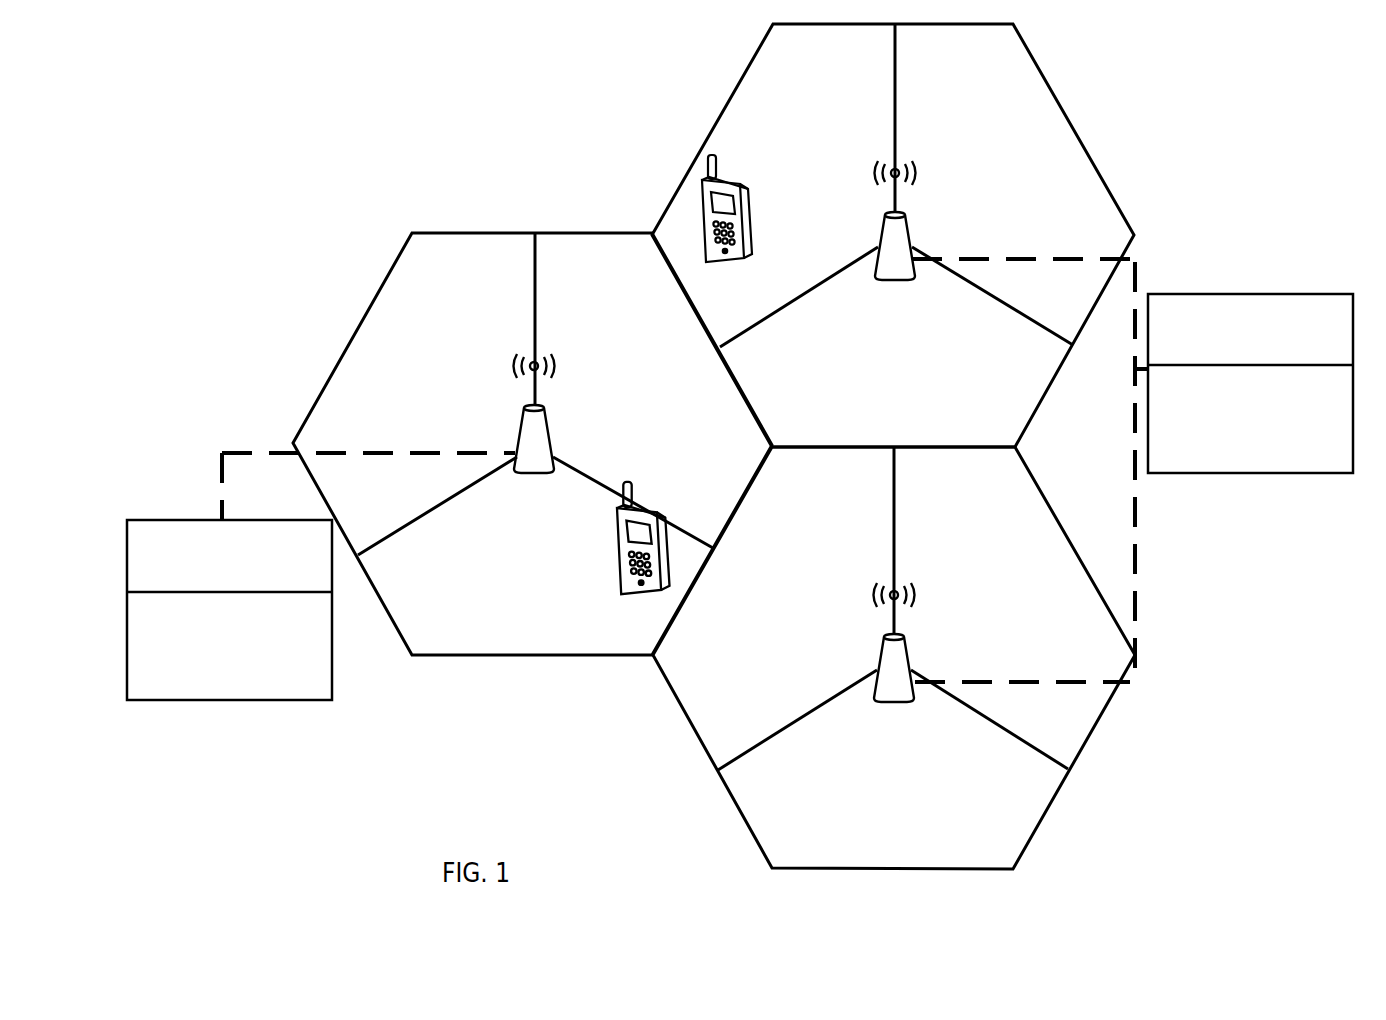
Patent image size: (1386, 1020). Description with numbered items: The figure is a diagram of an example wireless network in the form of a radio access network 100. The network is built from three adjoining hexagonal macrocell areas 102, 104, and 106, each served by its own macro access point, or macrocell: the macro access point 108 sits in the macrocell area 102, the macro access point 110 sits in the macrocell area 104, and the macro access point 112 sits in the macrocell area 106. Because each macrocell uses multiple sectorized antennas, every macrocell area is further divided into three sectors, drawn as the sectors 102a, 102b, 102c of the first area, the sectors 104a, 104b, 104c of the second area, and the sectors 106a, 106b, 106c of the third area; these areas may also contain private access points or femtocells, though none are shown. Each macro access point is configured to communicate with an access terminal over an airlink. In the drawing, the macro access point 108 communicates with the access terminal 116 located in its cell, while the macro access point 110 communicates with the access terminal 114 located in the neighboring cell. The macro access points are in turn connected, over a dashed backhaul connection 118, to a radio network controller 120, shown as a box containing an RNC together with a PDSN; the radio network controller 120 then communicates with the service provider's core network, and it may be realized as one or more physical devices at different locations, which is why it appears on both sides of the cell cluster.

The radio access network 100 is at (326, 104).
The macrocell area 102 is at (386, 275).
The sector 102a is at (448, 407).
The sector 102b is at (653, 408).
The sector 102c is at (556, 598).
The macrocell area 104 is at (1077, 130).
The sector 104a is at (810, 193).
The sector 104b is at (1016, 188).
The sector 104c is at (921, 383).
The macrocell area 106 is at (720, 778).
The sector 106a is at (809, 620).
The sector 106b is at (1018, 622).
The sector 106c is at (919, 817).
The macro access point 108 is at (534, 476).
The macro access point 110 is at (895, 281).
The macro access point 112 is at (893, 705).
The access terminal 114 is at (750, 236).
The access terminal 116 is at (643, 592).
The backhaul connection 118 is at (220, 460).
The radio network controller 120 is at (245, 680).